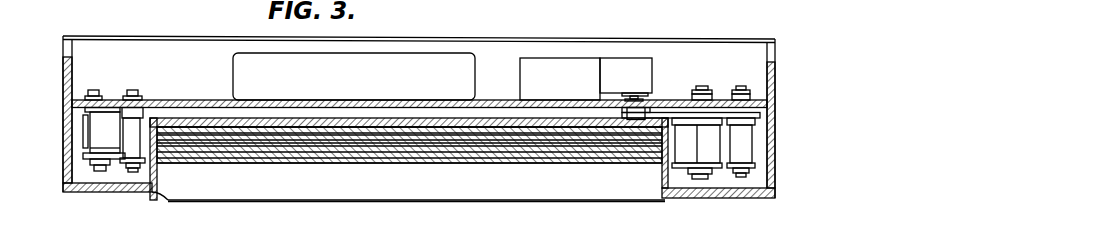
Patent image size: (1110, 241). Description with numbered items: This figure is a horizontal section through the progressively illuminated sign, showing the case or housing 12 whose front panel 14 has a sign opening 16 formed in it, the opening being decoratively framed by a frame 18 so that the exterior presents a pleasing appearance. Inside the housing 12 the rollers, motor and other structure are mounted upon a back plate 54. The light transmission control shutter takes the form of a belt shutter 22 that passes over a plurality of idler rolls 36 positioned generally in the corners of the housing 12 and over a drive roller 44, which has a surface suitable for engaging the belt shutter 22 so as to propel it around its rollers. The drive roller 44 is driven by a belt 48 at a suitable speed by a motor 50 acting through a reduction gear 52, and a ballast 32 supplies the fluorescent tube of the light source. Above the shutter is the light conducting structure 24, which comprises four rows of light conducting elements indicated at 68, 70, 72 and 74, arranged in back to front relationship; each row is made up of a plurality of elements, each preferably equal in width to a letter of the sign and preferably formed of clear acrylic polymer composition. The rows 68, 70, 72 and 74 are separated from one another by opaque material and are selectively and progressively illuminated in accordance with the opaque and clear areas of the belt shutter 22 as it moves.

The housing 12 is at (778, 92).
The front panel 14 is at (747, 195).
The sign opening 16 is at (663, 178).
The frame 18 is at (688, 200).
The belt shutter 22 is at (113, 160).
The light conducting structure 24 is at (432, 148).
The ballast 32 is at (450, 65).
The idler rolls 36 is at (90, 158).
The drive roller 44 is at (717, 155).
The belt 48 is at (660, 118).
The motor 50 is at (571, 63).
The reduction gear 52 is at (626, 62).
The back plate 54 is at (190, 100).
The row of light conducting elements 68 is at (253, 128).
The row of light conducting elements 70 is at (279, 138).
The row of light conducting elements 72 is at (327, 148).
The row of light conducting elements 74 is at (363, 155).